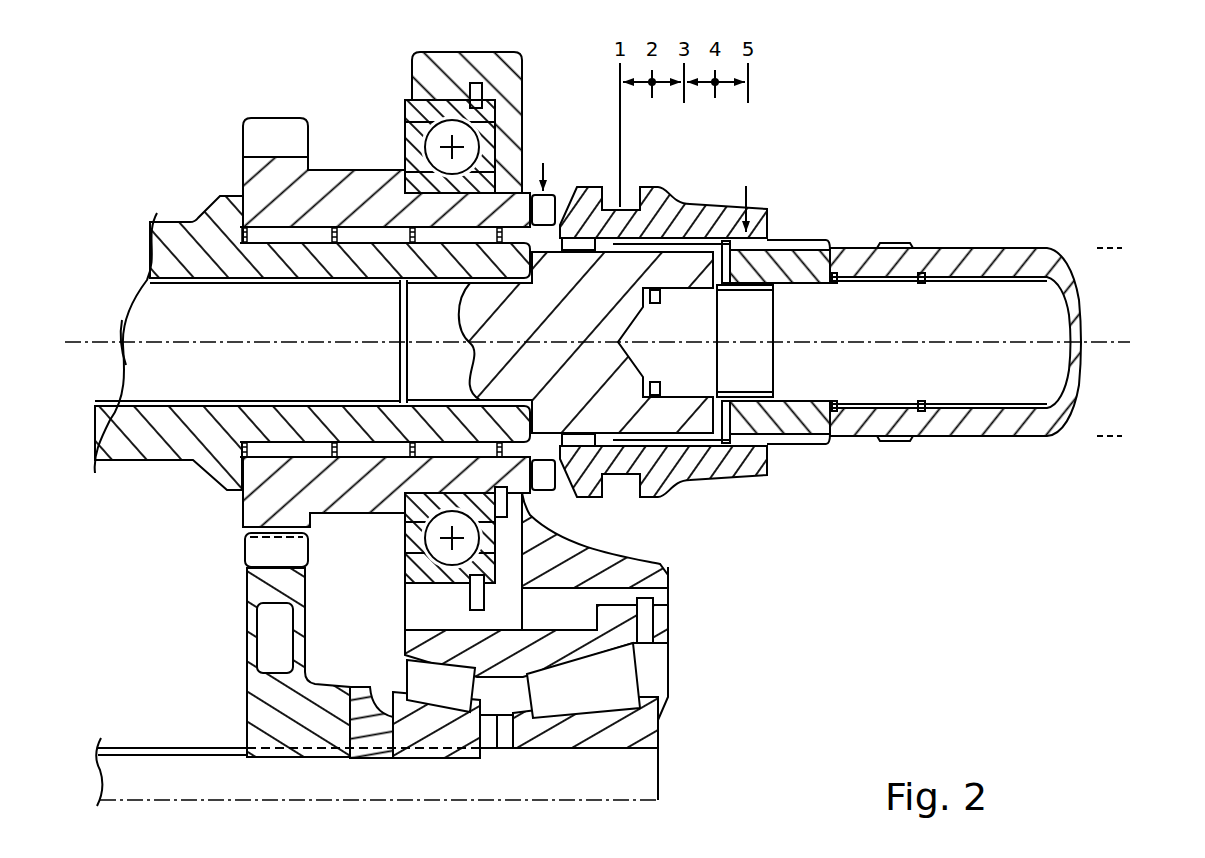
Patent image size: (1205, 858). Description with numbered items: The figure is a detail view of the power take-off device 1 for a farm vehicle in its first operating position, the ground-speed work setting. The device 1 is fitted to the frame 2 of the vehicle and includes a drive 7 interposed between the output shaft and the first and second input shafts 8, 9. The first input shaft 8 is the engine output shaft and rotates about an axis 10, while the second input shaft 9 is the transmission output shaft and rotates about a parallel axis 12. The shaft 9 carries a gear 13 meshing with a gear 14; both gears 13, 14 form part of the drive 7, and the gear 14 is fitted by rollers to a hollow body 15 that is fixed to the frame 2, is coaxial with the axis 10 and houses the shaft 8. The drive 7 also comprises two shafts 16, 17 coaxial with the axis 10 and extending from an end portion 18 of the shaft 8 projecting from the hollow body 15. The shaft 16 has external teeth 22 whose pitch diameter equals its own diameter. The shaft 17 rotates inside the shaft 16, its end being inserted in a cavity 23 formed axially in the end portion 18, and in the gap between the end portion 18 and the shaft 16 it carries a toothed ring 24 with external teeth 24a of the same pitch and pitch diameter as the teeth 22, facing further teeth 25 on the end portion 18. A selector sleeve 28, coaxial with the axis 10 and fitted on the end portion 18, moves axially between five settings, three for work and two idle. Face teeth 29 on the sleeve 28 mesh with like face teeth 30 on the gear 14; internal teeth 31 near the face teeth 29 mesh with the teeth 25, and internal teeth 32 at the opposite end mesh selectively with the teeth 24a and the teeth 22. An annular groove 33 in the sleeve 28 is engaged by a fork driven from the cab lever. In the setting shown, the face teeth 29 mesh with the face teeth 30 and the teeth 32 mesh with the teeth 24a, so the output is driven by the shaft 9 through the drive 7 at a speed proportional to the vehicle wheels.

The power take-off device 1 is at (93, 88).
The frame 2 is at (493, 60).
The drive 7 is at (968, 172).
The first input shaft 8 is at (145, 322).
The second input shaft 9 is at (123, 783).
The axis 10 is at (93, 354).
The axis 12 is at (375, 800).
The gear 13 is at (273, 662).
The gear 14 is at (253, 172).
The hollow body 15 is at (165, 246).
The shaft 16 is at (1015, 255).
The shaft 17 is at (1055, 320).
The end portion 18 is at (492, 357).
The external teeth 22 is at (892, 243).
The cavity 23 is at (643, 360).
The toothed ring 24 is at (783, 270).
The external teeth 24a is at (815, 240).
The teeth 25 is at (672, 245).
The sleeve 28 is at (673, 467).
The face teeth 29 is at (560, 190).
The face teeth 30 is at (547, 482).
The internal teeth 31 is at (580, 473).
The internal teeth 32 is at (747, 445).
The annular groove 33 is at (613, 205).